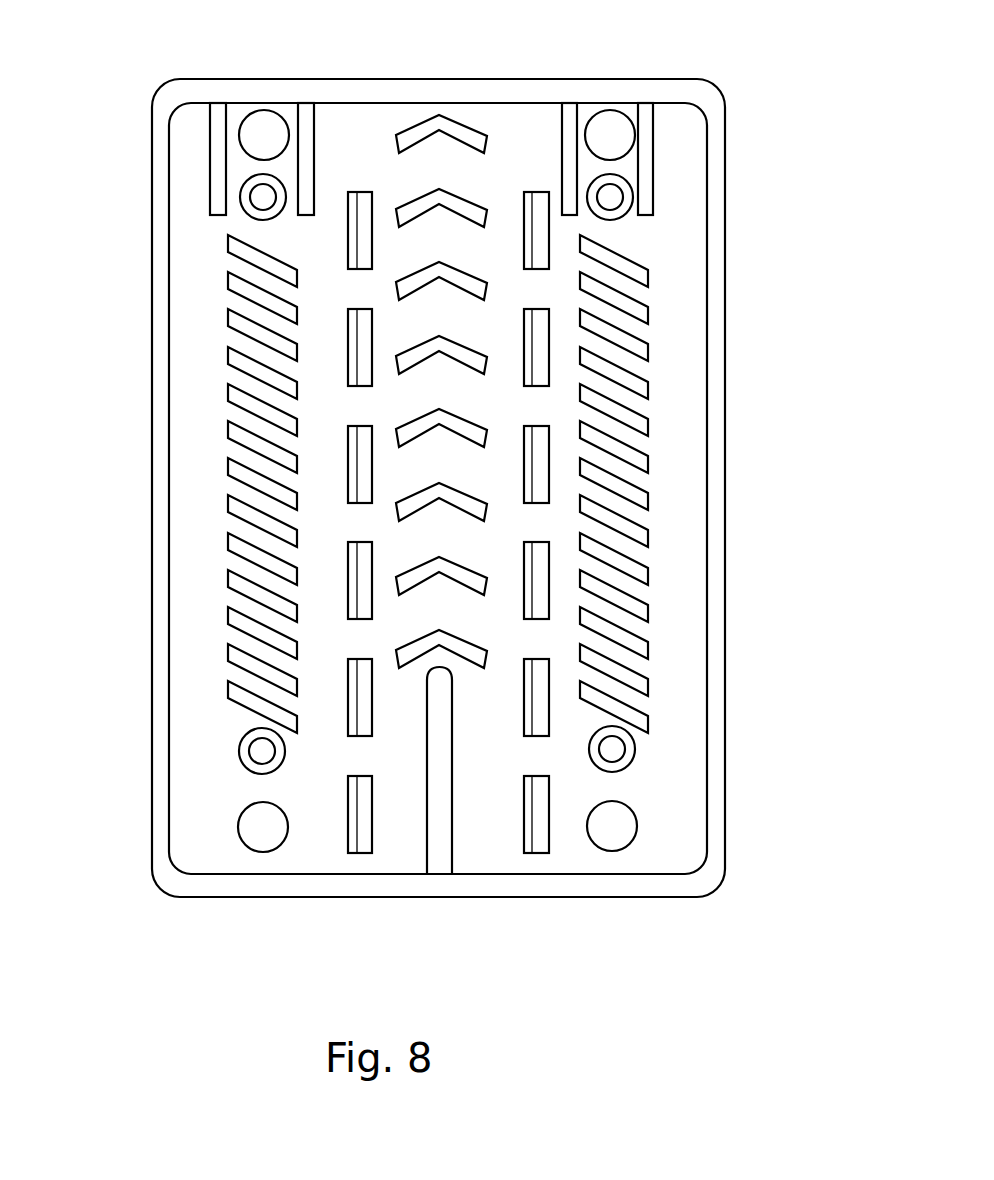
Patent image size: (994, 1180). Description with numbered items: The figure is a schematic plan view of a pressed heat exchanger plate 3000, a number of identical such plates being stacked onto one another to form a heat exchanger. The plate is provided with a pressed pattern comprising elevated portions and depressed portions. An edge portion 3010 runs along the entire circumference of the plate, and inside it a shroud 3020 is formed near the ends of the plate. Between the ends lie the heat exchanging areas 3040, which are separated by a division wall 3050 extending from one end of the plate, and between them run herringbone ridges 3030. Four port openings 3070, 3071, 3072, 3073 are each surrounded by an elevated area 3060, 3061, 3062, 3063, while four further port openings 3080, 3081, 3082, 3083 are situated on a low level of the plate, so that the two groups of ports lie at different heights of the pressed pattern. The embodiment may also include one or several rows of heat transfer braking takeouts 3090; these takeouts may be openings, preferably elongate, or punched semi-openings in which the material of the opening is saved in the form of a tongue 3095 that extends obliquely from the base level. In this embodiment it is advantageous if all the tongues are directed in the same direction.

The heat exchanger plate 3000 is at (667, 80).
The edge portion 3010 is at (712, 245).
The shroud 3020 is at (307, 112).
The herringbone ridges 3030 is at (485, 288).
The heat exchanging areas 3040 is at (648, 385).
The division wall 3050 is at (452, 850).
The elevated area 3060 is at (633, 200).
The elevated area 3061 is at (637, 740).
The elevated area 3062 is at (258, 193).
The elevated area 3063 is at (243, 737).
The port opening 3070 is at (615, 190).
The port opening 3071 is at (612, 755).
The port opening 3072 is at (239, 193).
The port opening 3073 is at (255, 747).
The port opening 3080 is at (585, 135).
The port opening 3081 is at (637, 830).
The port opening 3082 is at (238, 133).
The port opening 3083 is at (268, 843).
The heat transfer braking takeout 3090 is at (533, 537).
The tongue 3095 is at (538, 583).